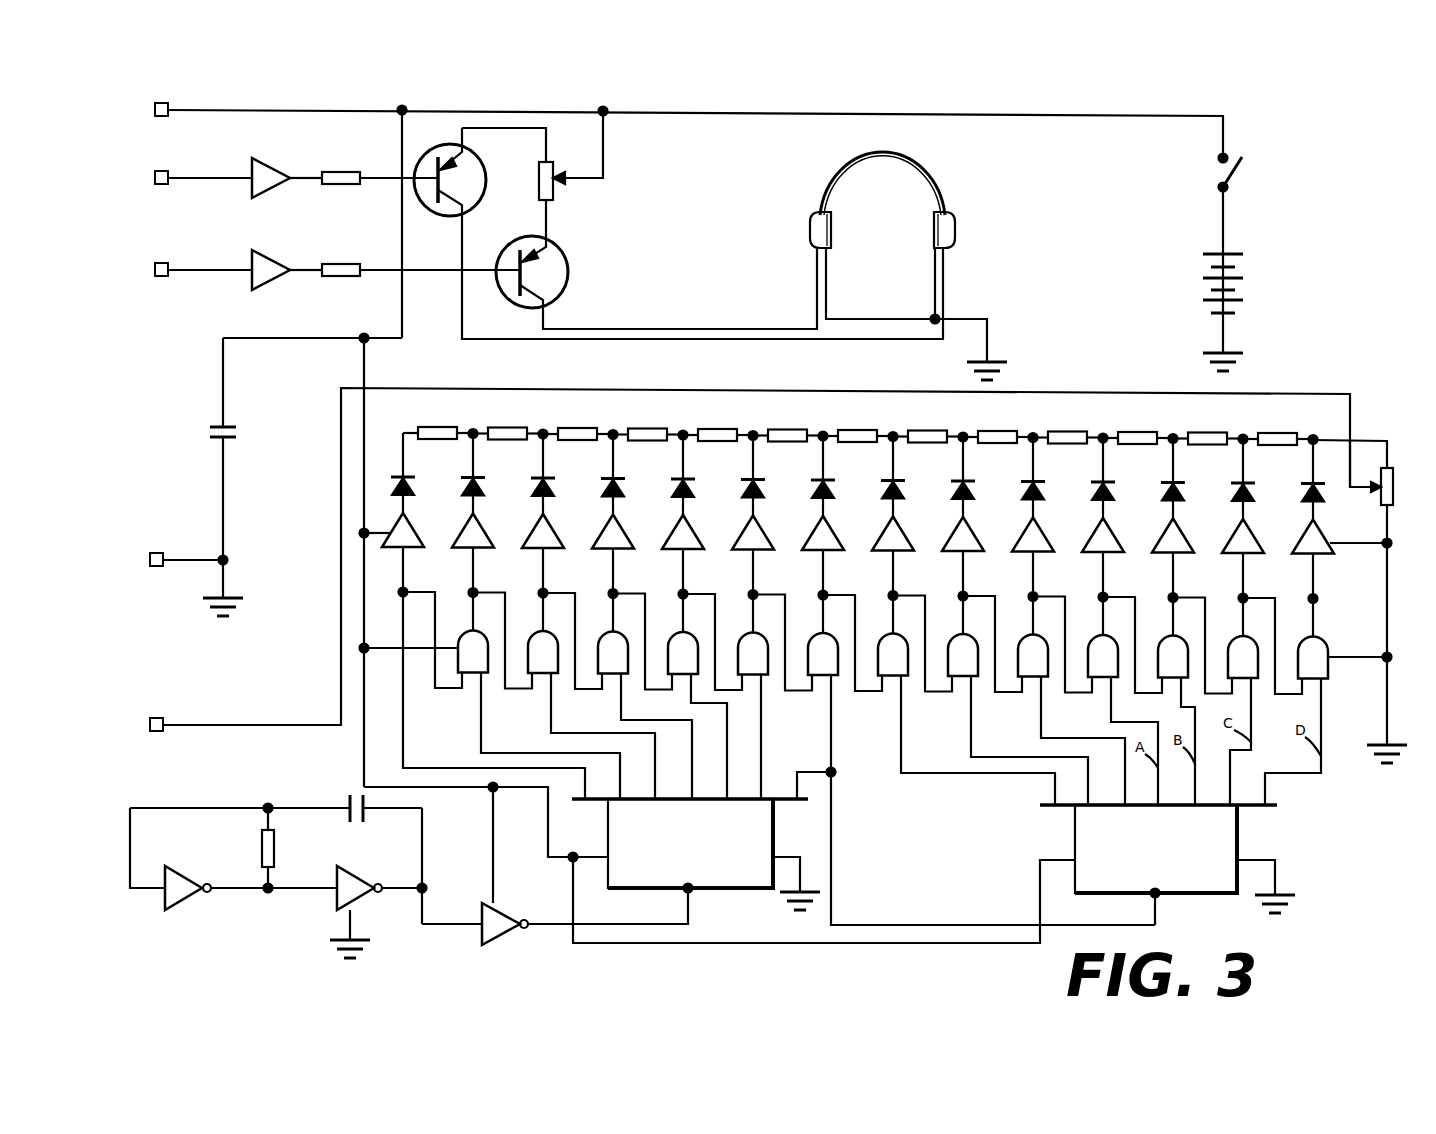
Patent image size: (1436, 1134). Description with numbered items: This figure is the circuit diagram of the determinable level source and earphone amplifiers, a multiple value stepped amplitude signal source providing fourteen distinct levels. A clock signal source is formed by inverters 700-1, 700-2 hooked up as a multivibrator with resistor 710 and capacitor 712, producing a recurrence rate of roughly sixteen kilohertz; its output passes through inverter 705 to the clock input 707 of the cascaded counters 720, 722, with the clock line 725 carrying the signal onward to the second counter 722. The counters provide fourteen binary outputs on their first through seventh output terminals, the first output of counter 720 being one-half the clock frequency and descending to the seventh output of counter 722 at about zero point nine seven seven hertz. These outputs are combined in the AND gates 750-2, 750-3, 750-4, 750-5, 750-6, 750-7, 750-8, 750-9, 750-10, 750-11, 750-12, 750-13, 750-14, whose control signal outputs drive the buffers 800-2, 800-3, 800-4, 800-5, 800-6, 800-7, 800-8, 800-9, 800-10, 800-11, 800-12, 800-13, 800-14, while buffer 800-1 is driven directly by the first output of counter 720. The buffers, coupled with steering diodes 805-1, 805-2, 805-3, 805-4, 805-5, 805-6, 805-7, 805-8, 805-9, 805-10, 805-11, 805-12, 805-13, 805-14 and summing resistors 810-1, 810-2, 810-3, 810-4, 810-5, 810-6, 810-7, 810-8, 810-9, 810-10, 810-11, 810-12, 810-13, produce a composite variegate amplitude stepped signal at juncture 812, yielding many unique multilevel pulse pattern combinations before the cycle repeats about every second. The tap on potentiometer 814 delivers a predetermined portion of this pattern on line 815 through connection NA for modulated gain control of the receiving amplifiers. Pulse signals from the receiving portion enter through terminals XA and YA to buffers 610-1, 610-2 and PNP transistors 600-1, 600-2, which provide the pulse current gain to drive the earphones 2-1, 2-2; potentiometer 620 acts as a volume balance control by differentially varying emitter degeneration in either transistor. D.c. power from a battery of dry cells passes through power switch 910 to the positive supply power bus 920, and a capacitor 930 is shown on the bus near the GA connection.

The buffer 610-1 is at (268, 176).
The buffer 610-2 is at (268, 268).
The PNP transistor 600-1 is at (473, 178).
The PNP transistor 600-2 is at (552, 288).
The potentiometer 620 is at (558, 194).
The earphone 2-1 is at (950, 222).
The earphone 2-2 is at (810, 228).
The power switch 910 is at (1238, 175).
The power bus 920 is at (1130, 117).
The capacitor 930 is at (226, 432).
The line 815 is at (258, 724).
The juncture 812 is at (1368, 440).
The potentiometer 814 is at (1395, 470).
The summing resistor 810-1 is at (435, 430).
The summing resistor 810-2 is at (505, 430).
The summing resistor 810-3 is at (575, 431).
The summing resistor 810-4 is at (645, 431).
The summing resistor 810-5 is at (717, 432).
The summing resistor 810-6 is at (787, 432).
The summing resistor 810-7 is at (857, 433).
The summing resistor 810-8 is at (927, 433).
The summing resistor 810-9 is at (997, 434).
The summing resistor 810-10 is at (1067, 434).
The summing resistor 810-11 is at (1137, 435).
The summing resistor 810-12 is at (1207, 435).
The summing resistor 810-13 is at (1277, 436).
The steering diode 805-1 is at (408, 485).
The steering diode 805-2 is at (478, 485).
The steering diode 805-3 is at (548, 486).
The steering diode 805-4 is at (618, 486).
The steering diode 805-5 is at (688, 487).
The steering diode 805-6 is at (758, 487).
The steering diode 805-7 is at (828, 488).
The steering diode 805-8 is at (898, 488).
The steering diode 805-9 is at (968, 489).
The steering diode 805-10 is at (1038, 489).
The steering diode 805-11 is at (1108, 490).
The steering diode 805-12 is at (1178, 490).
The steering diode 805-13 is at (1248, 491).
The steering diode 805-14 is at (1325, 490).
The buffer 800-1 is at (408, 537).
The buffer 800-2 is at (478, 537).
The buffer 800-3 is at (548, 538).
The buffer 800-4 is at (618, 538).
The buffer 800-5 is at (688, 539).
The buffer 800-6 is at (758, 539).
The buffer 800-7 is at (828, 540).
The buffer 800-8 is at (898, 540).
The buffer 800-9 is at (968, 541).
The buffer 800-10 is at (1038, 541).
The buffer 800-11 is at (1108, 542).
The buffer 800-12 is at (1178, 542).
The buffer 800-13 is at (1248, 543).
The buffer 800-14 is at (1320, 560).
The AND gate 750-2 is at (463, 642).
The AND gate 750-3 is at (533, 643).
The AND gate 750-4 is at (603, 643).
The AND gate 750-5 is at (673, 644).
The AND gate 750-6 is at (743, 644).
The AND gate 750-7 is at (813, 645).
The AND gate 750-8 is at (883, 645).
The AND gate 750-9 is at (953, 646).
The AND gate 750-10 is at (1023, 647).
The AND gate 750-11 is at (1093, 648).
The AND gate 750-12 is at (1163, 648).
The AND gate 750-13 is at (1233, 649).
The AND gate 750-14 is at (1303, 649).
The counter 720 is at (725, 834).
The counter 722 is at (1212, 843).
The clock conductor 725 is at (830, 870).
The clock input 707 is at (692, 896).
The inverter 705 is at (497, 916).
The inverter 700-1 is at (182, 880).
The inverter 700-2 is at (352, 878).
The resistor 710 is at (273, 857).
The capacitor 712 is at (345, 805).